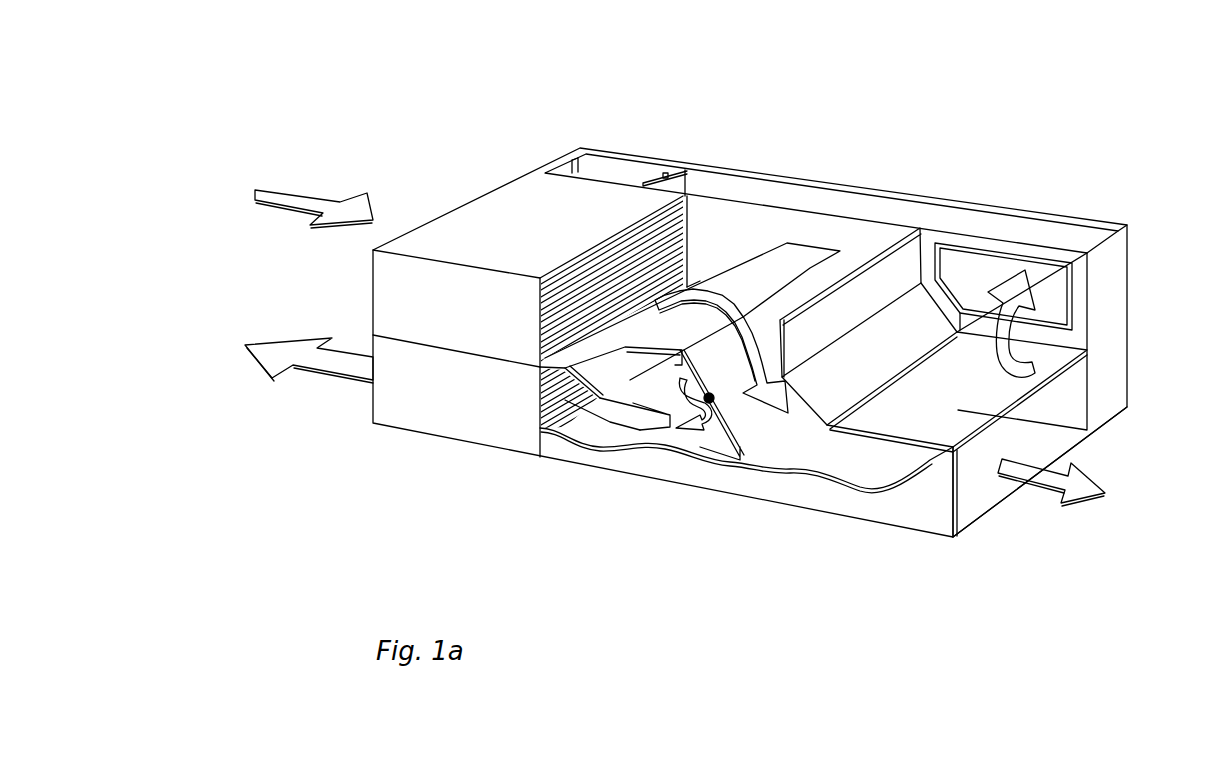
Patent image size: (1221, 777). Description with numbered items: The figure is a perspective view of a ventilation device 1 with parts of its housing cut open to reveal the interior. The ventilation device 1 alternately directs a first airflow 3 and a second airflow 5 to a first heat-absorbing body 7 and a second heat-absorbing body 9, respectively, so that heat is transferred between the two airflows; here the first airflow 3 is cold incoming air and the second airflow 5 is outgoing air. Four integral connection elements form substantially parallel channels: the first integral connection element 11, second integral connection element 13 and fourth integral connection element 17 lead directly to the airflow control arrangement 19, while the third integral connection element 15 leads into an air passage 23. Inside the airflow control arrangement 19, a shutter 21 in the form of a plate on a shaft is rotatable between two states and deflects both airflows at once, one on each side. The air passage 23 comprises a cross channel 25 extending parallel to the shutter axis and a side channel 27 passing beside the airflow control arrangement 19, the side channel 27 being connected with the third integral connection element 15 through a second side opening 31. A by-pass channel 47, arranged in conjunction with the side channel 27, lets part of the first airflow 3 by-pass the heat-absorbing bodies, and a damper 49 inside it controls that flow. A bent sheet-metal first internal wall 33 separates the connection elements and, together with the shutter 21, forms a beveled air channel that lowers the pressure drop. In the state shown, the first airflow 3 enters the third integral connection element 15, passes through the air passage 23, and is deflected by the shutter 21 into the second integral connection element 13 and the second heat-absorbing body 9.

The ventilation device 1 is at (907, 512).
The first airflow 3 is at (276, 354).
The second airflow 5 is at (290, 190).
The first heat-absorbing body 7 is at (497, 208).
The second heat-absorbing body 9 is at (416, 408).
The first integral connection element 11 is at (735, 210).
The second integral connection element 13 is at (602, 440).
The third integral connection element 15 is at (977, 390).
The fourth integral connection element 17 is at (978, 490).
The airflow control arrangement 19 is at (743, 415).
The shutter 21 is at (838, 268).
The air passage 23 is at (637, 385).
The cross channel 25 is at (620, 405).
The side channel 27 is at (937, 213).
The second side opening 31 is at (1053, 297).
The first internal wall 33 is at (857, 418).
The by-pass channel 47 is at (612, 165).
The damper 49 is at (696, 180).